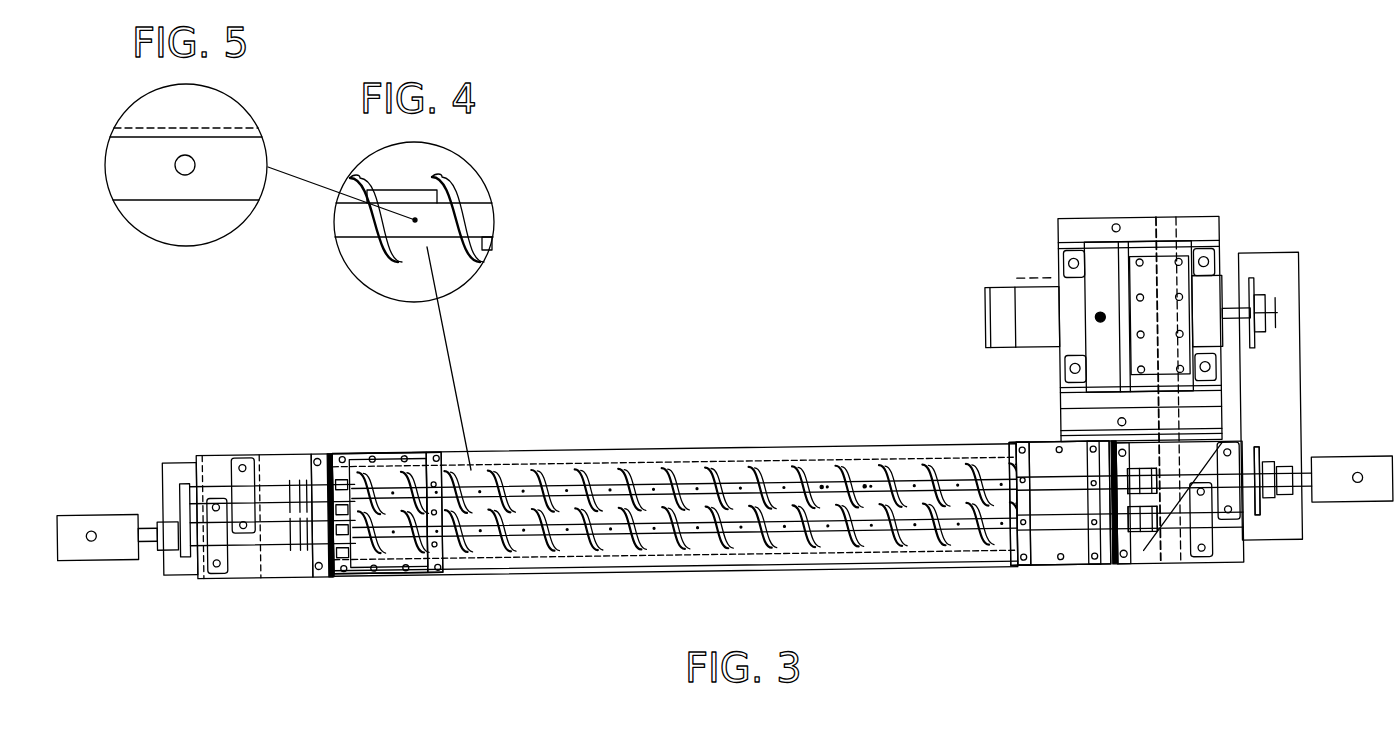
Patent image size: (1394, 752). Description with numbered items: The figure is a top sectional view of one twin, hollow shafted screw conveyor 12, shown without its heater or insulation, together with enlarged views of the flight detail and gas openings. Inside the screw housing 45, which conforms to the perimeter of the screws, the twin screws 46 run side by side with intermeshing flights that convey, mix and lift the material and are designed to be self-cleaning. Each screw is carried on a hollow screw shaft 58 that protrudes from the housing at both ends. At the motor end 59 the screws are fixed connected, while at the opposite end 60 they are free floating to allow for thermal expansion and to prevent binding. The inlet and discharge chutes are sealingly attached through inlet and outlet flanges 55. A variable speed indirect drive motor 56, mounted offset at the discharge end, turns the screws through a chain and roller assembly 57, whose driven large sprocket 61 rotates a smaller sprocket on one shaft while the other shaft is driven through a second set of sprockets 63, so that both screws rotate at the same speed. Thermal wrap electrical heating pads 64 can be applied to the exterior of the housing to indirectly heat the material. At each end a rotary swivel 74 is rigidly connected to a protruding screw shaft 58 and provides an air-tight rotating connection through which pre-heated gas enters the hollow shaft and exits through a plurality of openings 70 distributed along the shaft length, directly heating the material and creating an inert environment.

In FIG. 3, the screw conveyor 12 is at (380, 447).
In FIG. 3, the screw housing 45 is at (650, 558).
In FIG. 4, the twin screws 46 is at (410, 253).
In FIG. 3, the twin screws 46 is at (693, 468).
In FIG. 3, the inlet and outlet flanges 55 is at (438, 573).
In FIG. 3, the variable speed indirect drive motor 56 is at (1003, 288).
In FIG. 3, the chain and roller assembly 57 is at (1300, 297).
In FIG. 5, the screw shafts 58 is at (220, 202).
In FIG. 4, the screw shafts 58 is at (357, 240).
In FIG. 3, the screw shafts 58 is at (603, 467).
In FIG. 3, the motor end 59 is at (1107, 567).
In FIG. 3, the opposite end 60 is at (352, 580).
In FIG. 3, the driven large sprocket 61 is at (1258, 284).
In FIG. 3, the second set of sprockets 63 is at (1153, 530).
In FIG. 3, the thermal wrap electrical heating pads 64 is at (1258, 515).
In FIG. 5, the openings 70 is at (180, 175).
In FIG. 4, the openings 70 is at (417, 215).
In FIG. 3, the openings 70 is at (863, 470).
In FIG. 3, the rotary swivel 74 is at (112, 520).